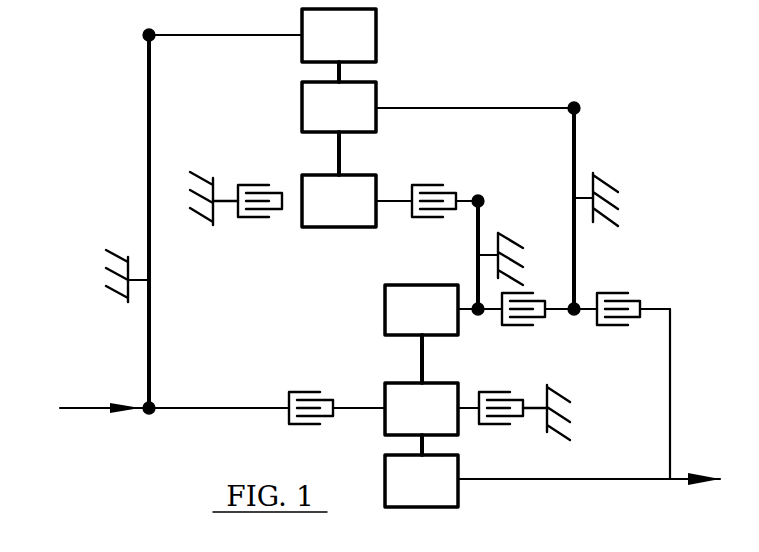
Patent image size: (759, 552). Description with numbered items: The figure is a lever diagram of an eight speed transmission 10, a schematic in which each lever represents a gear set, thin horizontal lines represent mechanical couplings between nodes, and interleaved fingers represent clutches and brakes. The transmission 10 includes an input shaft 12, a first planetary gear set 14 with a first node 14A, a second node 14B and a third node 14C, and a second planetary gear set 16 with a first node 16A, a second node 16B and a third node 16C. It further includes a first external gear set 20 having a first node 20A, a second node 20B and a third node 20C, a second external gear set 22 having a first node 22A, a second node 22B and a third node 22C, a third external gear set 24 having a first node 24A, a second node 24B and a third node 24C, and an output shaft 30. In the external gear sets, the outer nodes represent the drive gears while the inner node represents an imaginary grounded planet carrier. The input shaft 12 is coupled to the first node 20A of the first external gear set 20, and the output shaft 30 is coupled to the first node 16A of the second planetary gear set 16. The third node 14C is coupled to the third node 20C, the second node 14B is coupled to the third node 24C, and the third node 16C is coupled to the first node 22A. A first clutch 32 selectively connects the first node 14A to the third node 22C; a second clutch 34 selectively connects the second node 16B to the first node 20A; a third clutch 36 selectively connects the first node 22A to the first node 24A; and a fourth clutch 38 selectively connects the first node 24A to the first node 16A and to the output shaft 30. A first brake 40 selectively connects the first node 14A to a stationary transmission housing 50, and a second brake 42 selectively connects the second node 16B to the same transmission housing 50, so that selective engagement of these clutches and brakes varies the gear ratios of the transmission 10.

The eight speed transmission 10 is at (509, 61).
The input shaft 12 is at (80, 406).
The first planetary gear set 14 is at (339, 167).
The first node of first planetary gear set 14A is at (339, 201).
The second node of first planetary gear set 14B is at (339, 107).
The third node of first planetary gear set 14C is at (339, 35).
The second planetary gear set 16 is at (377, 396).
The first node of second planetary gear set 16A is at (421, 481).
The second node of second planetary gear set 16B is at (421, 409).
The third node of second planetary gear set 16C is at (421, 310).
The first external gear set 20 is at (117, 428).
The first node of first external gear set 20A is at (148, 412).
The second node of first external gear set 20B is at (146, 278).
The third node of first external gear set 20C is at (144, 37).
The second external gear set 22 is at (492, 326).
The first node of second external gear set 22A is at (481, 313).
The second node of second external gear set 22B is at (476, 257).
The third node of second external gear set 22C is at (482, 195).
The third external gear set 24 is at (579, 133).
The first node of third external gear set 24A is at (576, 313).
The second node of third external gear set 24B is at (573, 198).
The third node of third external gear set 24C is at (578, 106).
The output shaft 30 is at (672, 483).
The first clutch 32 is at (426, 183).
The second clutch 34 is at (300, 392).
The third clutch 36 is at (525, 292).
The fourth clutch 38 is at (614, 292).
The first brake 40 is at (258, 185).
The second brake 42 is at (495, 428).
The transmission housing 50 is at (200, 178).